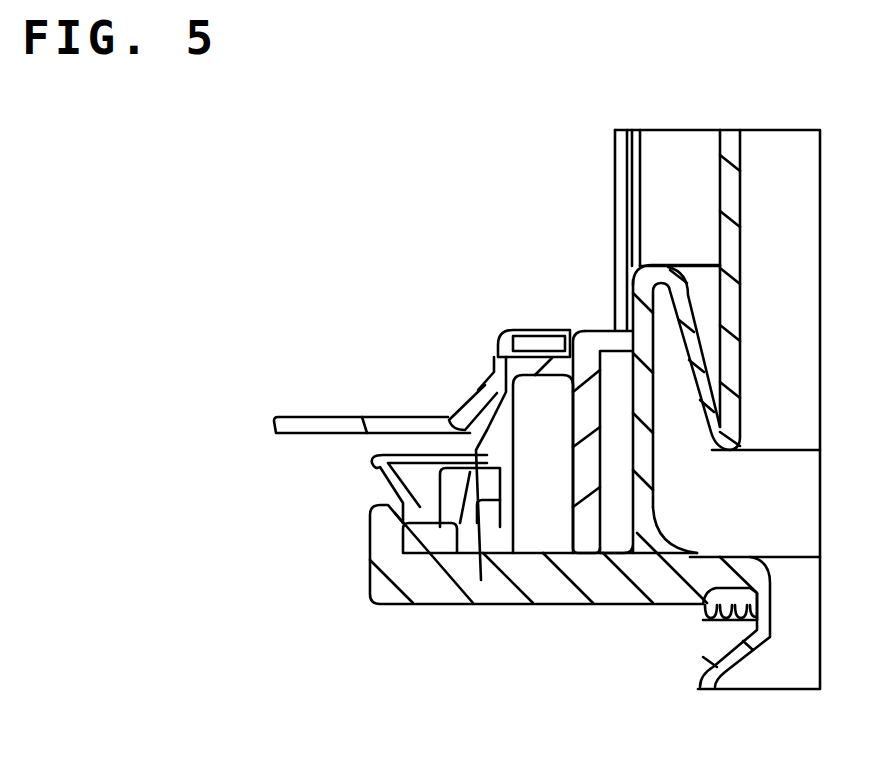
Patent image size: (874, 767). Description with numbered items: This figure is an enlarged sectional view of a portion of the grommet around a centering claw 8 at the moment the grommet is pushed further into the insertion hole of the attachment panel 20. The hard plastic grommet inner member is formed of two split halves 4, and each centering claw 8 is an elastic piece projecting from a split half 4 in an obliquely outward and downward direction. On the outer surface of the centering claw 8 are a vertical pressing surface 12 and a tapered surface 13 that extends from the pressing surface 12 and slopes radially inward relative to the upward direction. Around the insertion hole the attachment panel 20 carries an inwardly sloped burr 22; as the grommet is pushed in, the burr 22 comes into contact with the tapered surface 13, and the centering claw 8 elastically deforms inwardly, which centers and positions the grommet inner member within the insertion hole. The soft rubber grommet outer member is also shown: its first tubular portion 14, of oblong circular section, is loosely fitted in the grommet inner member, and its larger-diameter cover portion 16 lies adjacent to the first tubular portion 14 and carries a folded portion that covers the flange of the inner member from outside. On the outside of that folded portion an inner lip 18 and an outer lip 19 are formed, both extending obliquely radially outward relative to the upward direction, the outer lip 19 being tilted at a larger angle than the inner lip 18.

The split half 4 is at (555, 367).
The centering claw 8 is at (511, 426).
The pressing surface 12 is at (481, 580).
The tapered surface 13 is at (482, 422).
The first tubular portion 14 is at (728, 130).
The cover portion 16 is at (437, 587).
The inner lip 18 is at (443, 490).
The outer lip 19 is at (380, 477).
The attachment panel 20 is at (325, 417).
The burr 22 is at (462, 402).